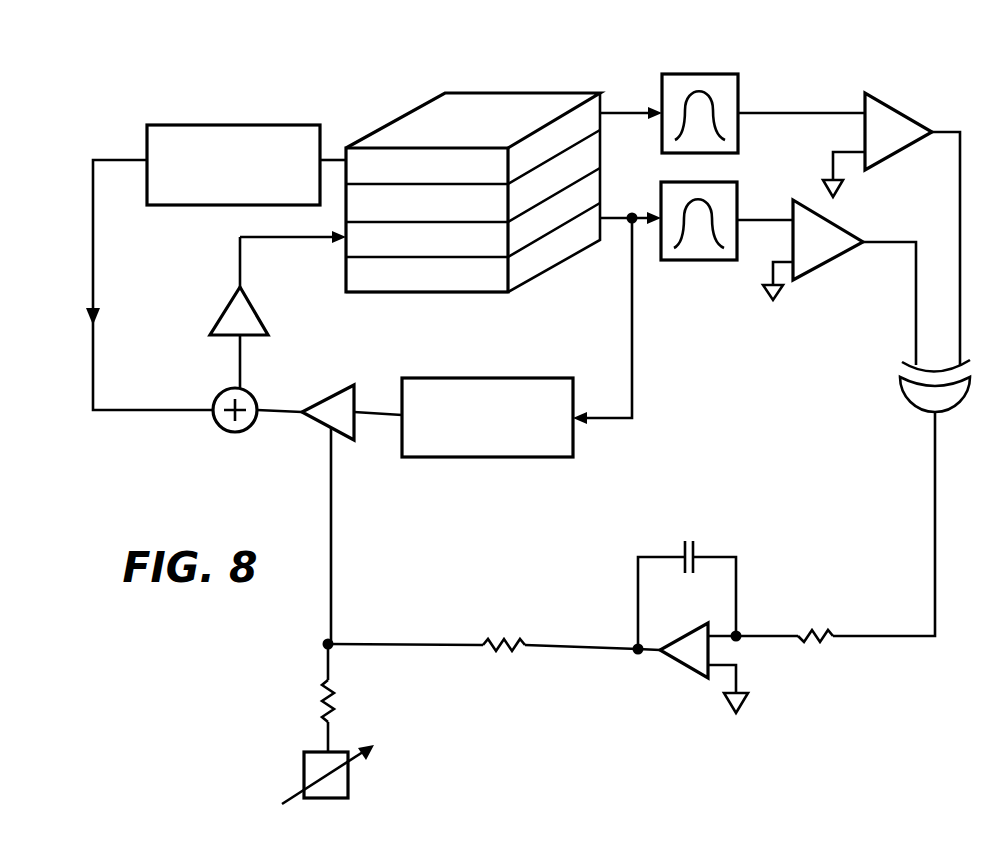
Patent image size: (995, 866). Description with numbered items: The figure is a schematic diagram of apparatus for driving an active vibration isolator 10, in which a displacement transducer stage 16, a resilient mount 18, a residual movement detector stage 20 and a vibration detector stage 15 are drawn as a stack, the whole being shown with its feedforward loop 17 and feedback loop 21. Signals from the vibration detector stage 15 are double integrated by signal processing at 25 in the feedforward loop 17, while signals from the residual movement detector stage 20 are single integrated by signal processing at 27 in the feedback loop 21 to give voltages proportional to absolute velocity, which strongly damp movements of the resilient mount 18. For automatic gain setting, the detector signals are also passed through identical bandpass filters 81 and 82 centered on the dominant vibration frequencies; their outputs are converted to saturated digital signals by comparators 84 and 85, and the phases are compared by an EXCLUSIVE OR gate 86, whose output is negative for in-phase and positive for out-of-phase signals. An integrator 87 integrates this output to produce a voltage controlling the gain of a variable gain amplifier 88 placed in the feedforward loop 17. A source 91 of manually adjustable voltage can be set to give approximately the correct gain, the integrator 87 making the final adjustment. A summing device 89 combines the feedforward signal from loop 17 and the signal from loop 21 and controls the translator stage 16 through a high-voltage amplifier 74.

The active vibration isolator 10 is at (332, 214).
The vibration detector stage 15 is at (404, 286).
The displacement transducer stage 16 is at (404, 250).
The feedforward loop 17 is at (417, 343).
The resilient mount 18 is at (404, 214).
The residual movement detector stage 20 is at (432, 179).
The feedback loop 21 is at (130, 281).
The double integrator 25 is at (527, 378).
The single integrator 27 is at (257, 125).
The high-voltage amplifier 74 is at (216, 312).
The bandpass filter 81 is at (713, 261).
The bandpass filter 82 is at (720, 74).
The comparator 84 is at (817, 268).
The comparator 85 is at (892, 103).
The EXCLUSIVE OR gate 86 is at (907, 400).
The integrator 87 is at (699, 610).
The variable gain amplifier 88 is at (330, 398).
The summing device 89 is at (226, 432).
The source of manually adjustable voltage 91 is at (304, 772).